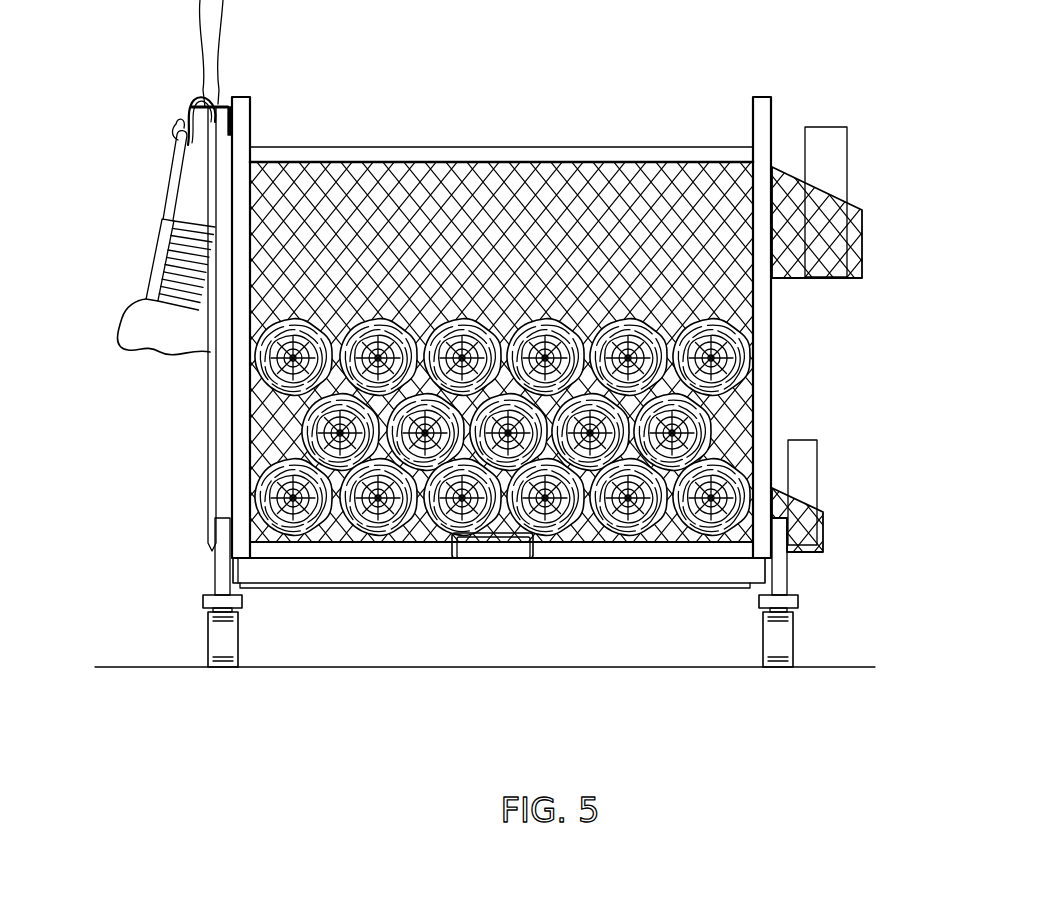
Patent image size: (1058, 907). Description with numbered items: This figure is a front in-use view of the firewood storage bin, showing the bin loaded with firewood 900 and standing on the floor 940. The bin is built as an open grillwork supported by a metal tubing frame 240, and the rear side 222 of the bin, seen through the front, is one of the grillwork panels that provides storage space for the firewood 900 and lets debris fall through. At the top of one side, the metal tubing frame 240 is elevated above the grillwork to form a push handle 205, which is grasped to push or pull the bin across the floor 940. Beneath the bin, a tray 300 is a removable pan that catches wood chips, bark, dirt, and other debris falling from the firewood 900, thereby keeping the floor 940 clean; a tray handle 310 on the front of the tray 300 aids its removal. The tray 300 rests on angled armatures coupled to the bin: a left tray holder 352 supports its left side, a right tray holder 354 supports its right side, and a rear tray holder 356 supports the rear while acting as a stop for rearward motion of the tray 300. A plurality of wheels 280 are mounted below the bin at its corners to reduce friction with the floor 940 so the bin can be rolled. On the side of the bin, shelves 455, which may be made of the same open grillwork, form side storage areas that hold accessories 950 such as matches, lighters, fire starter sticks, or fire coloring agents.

The push handle 205 is at (149, 257).
The rear side 222 is at (316, 187).
The metal tubing frame 240 is at (595, 158).
The plurality of wheels 280 is at (222, 660).
The tray 300 is at (403, 572).
The tray handle 310 is at (455, 549).
The left tray holder 352 is at (246, 590).
The right tray holder 354 is at (740, 618).
The rear tray holder 356 is at (616, 590).
The shelves 455 is at (862, 258).
The firewood 900 is at (382, 340).
The floor 940 is at (133, 668).
The accessories 950 is at (828, 133).